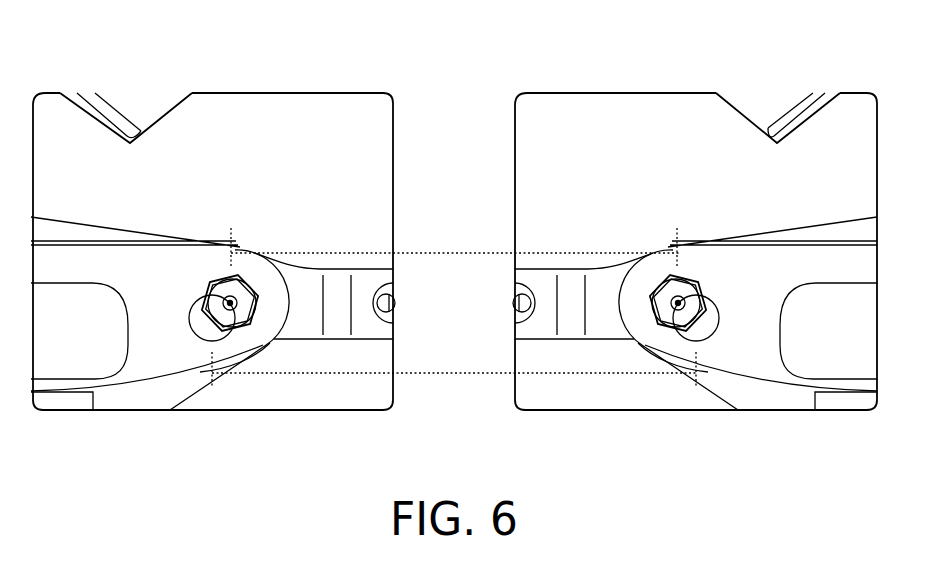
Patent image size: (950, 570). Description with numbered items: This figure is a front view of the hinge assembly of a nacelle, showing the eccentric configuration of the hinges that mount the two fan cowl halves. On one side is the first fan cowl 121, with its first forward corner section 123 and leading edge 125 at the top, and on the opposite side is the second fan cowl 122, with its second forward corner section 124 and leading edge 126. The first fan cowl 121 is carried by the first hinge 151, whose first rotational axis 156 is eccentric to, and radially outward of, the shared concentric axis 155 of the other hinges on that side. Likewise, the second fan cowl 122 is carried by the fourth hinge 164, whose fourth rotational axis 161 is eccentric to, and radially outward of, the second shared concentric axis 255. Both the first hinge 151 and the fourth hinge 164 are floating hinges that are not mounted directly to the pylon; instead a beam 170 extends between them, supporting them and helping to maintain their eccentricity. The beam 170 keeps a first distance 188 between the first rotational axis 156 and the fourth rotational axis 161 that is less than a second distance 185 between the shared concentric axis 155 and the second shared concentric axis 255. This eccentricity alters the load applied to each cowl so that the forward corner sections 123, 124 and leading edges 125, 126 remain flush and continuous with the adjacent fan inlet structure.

The first fan cowl 121 is at (154, 93).
The second fan cowl 122 is at (740, 90).
The first forward corner section 123 is at (141, 113).
The second forward corner section 124 is at (763, 117).
The leading edge 125 is at (108, 121).
The leading edge 126 is at (810, 123).
The first hinge 151 is at (215, 266).
The fourth hinge 164 is at (714, 270).
The first rotational axis 156 is at (210, 281).
The fourth rotational axis 161 is at (708, 281).
The shared concentric axis 155 is at (200, 337).
The second shared concentric axis 255 is at (713, 336).
The beam 170 is at (370, 330).
The first distance 188 is at (443, 252).
The second distance 185 is at (450, 377).